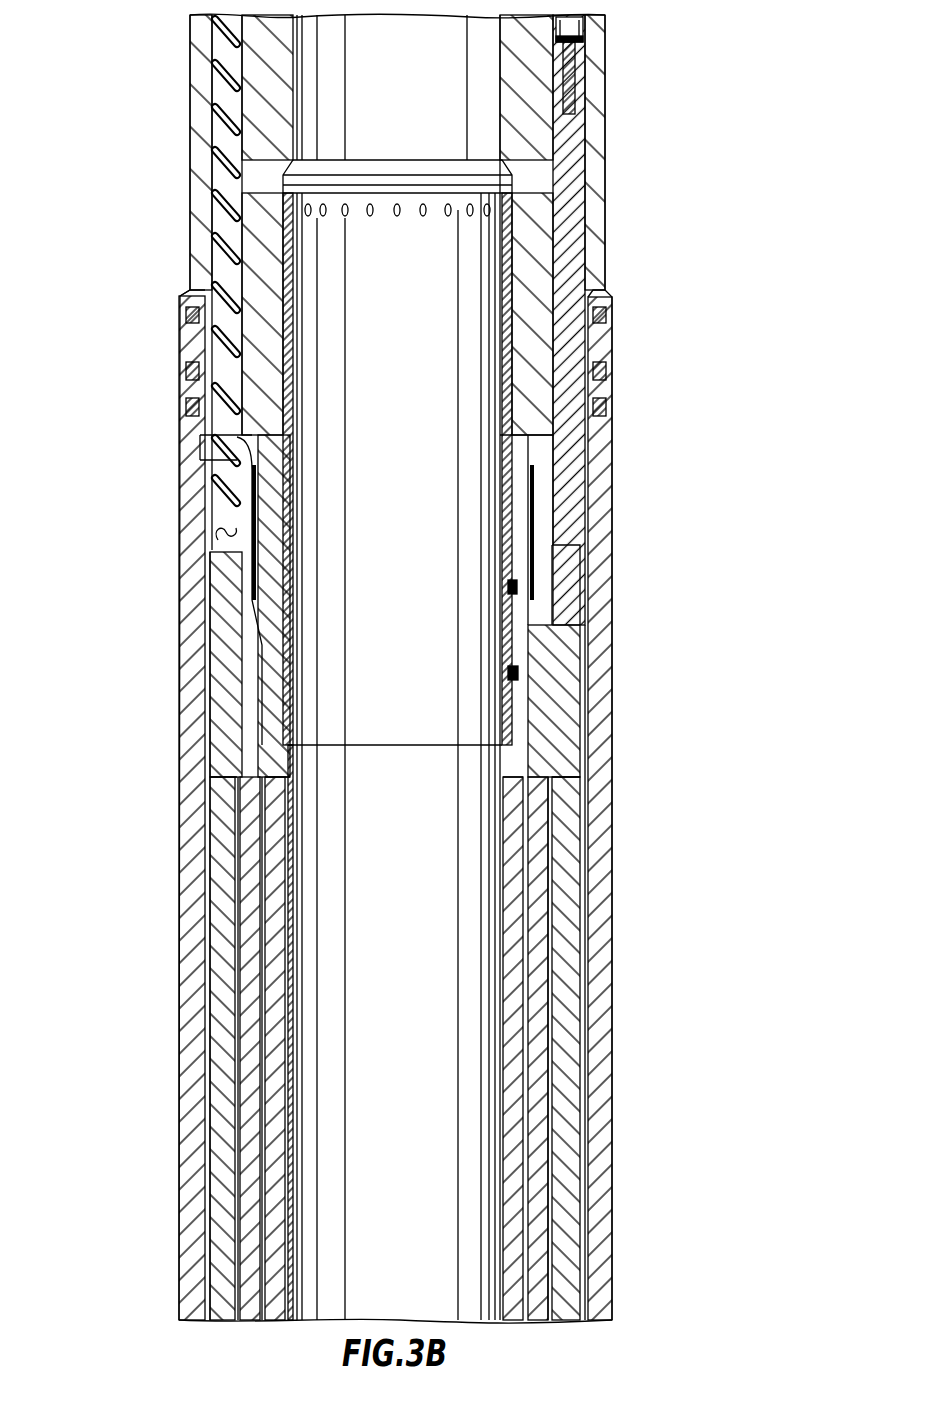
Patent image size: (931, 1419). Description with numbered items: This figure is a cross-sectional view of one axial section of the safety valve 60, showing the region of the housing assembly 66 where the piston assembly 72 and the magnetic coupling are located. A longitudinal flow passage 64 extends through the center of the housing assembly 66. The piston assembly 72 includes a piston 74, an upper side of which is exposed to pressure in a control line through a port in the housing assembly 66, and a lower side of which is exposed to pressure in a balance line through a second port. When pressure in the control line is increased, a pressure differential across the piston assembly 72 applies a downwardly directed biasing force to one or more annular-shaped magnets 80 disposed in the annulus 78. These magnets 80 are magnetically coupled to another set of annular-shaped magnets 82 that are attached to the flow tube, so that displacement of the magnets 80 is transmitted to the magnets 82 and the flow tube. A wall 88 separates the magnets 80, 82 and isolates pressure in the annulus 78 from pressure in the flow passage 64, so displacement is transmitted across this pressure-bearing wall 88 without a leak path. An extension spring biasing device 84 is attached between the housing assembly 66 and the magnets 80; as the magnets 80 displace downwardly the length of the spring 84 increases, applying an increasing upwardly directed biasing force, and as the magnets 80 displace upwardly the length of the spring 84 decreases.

The safety valve 60 is at (754, 63).
The longitudinal flow passage 64 is at (500, 1150).
The housing assembly 66 is at (178, 925).
The piston assembly 72 is at (585, 178).
The piston 74 is at (588, 34).
The annulus 78 is at (627, 735).
The annular-shaped magnets 80 is at (583, 1030).
The annular-shaped magnets 82 is at (265, 1128).
The extension spring biasing device 84 is at (222, 205).
The wall 88 is at (265, 1232).